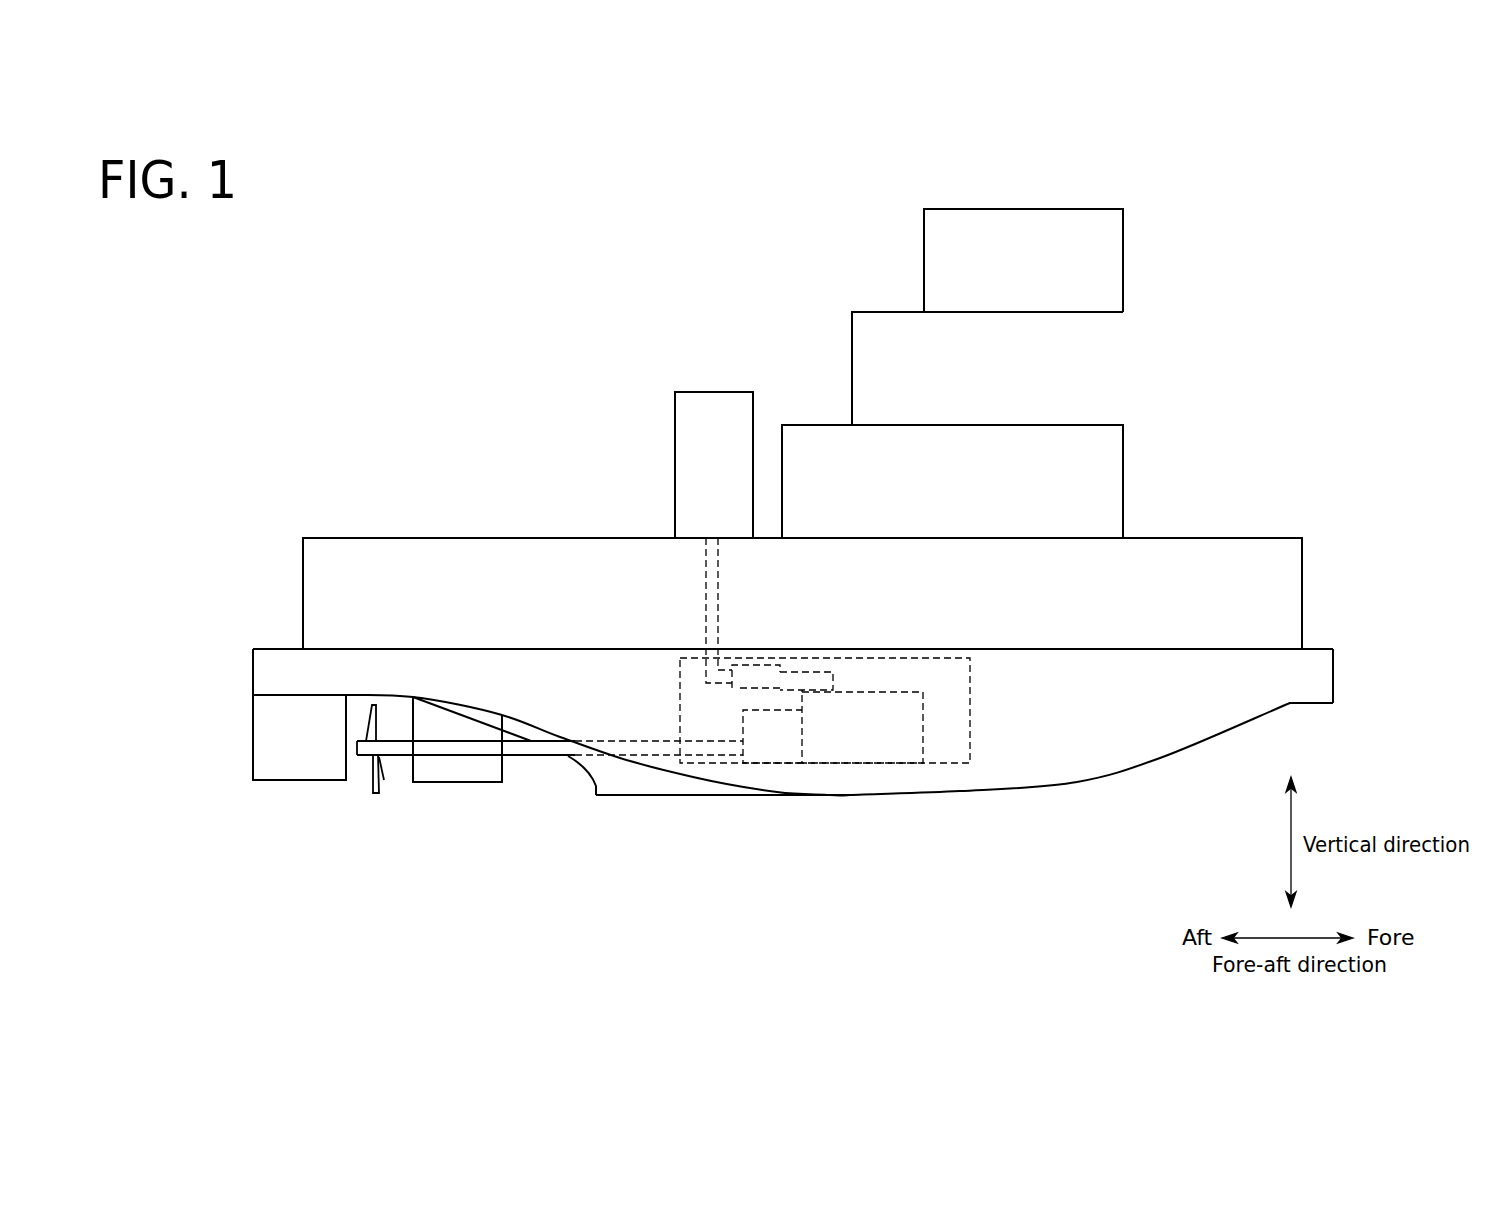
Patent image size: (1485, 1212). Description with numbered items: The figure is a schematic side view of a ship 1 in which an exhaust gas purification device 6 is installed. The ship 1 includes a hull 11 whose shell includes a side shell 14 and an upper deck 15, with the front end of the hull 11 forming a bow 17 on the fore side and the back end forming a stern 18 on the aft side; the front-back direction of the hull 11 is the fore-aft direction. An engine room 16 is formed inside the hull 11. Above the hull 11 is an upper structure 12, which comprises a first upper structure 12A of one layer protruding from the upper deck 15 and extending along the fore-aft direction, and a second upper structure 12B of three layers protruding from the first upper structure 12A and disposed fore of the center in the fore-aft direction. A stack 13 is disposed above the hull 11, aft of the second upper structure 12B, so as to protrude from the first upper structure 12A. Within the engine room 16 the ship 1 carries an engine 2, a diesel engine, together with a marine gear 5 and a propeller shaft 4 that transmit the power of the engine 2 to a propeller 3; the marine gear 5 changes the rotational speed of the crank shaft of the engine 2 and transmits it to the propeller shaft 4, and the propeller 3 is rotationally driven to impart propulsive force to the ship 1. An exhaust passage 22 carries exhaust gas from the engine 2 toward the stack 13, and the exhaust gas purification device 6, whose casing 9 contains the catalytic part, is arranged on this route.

The ship 1 is at (355, 243).
The engine 2 is at (868, 763).
The propeller 3 is at (363, 793).
The propeller shaft 4 is at (523, 757).
The marine gear 5 is at (778, 763).
The exhaust gas purification device 6 is at (646, 591).
The casing 9 is at (740, 690).
The hull 11 is at (1075, 782).
The upper structure 12 is at (802, 429).
The first upper structure 12A is at (374, 538).
The second upper structure 12B is at (1124, 376).
The stack 13 is at (717, 392).
The side shell 14 is at (1163, 760).
The upper deck 15 is at (1320, 648).
The engine room 16 is at (970, 733).
The bow 17 is at (1335, 685).
The stern 18 is at (253, 673).
The exhaust passage 22 is at (705, 603).